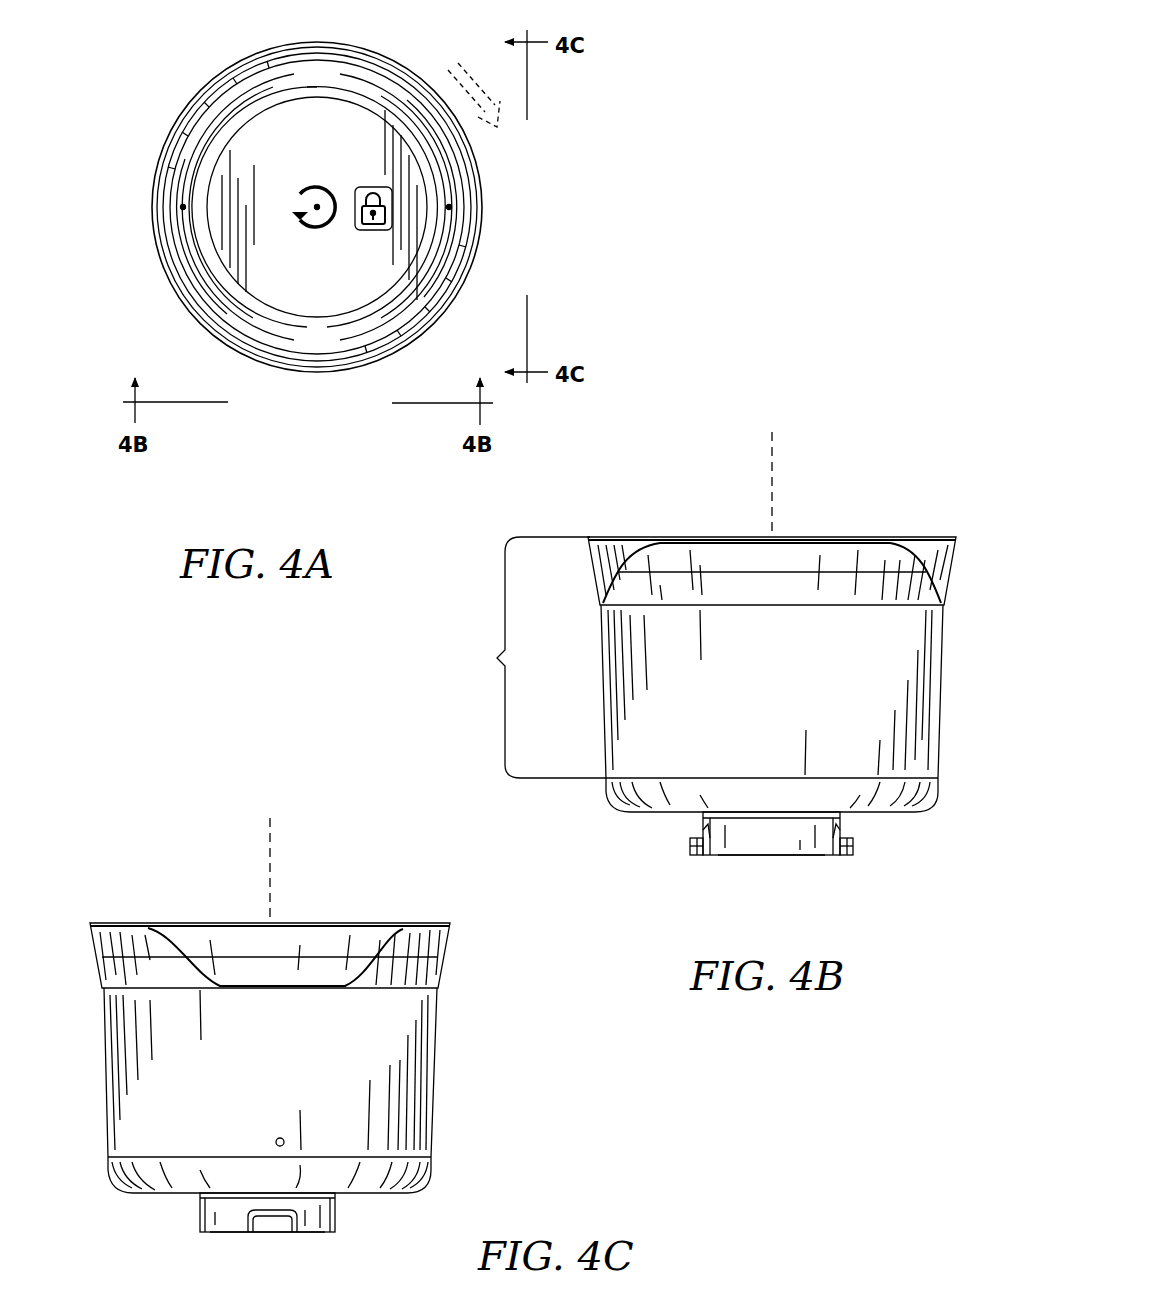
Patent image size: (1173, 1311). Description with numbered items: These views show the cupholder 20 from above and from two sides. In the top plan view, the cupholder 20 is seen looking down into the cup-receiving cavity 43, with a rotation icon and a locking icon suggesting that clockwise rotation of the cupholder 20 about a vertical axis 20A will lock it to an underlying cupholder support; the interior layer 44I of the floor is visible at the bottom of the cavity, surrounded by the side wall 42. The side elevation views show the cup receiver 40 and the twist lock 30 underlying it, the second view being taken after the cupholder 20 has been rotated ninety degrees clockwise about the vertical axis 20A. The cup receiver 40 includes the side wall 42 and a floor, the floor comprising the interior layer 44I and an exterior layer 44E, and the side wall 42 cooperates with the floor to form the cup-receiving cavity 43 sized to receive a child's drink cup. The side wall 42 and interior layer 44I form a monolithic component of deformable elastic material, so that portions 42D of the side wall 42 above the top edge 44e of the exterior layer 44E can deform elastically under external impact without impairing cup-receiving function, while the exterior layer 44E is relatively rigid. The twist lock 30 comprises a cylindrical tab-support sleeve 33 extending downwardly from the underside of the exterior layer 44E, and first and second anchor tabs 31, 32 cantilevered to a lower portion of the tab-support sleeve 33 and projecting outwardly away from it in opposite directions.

In FIG. 4A, the cupholder 20 is at (363, 42).
In FIG. 4B, the cupholder 20 is at (840, 535).
In FIG. 4C, the cupholder 20 is at (340, 920).
In FIG. 4A, the vertical axis 20A is at (314, 207).
In FIG. 4B, the vertical axis 20A is at (776, 460).
In FIG. 4C, the vertical axis 20A is at (274, 848).
In FIG. 4B, the twist lock 30 is at (722, 862).
In FIG. 4C, the twist lock 30 is at (195, 1212).
In FIG. 4B, the first anchor tab 31 is at (853, 846).
In FIG. 4C, the first anchor tab 31 is at (272, 1232).
In FIG. 4B, the second anchor tab 32 is at (690, 846).
In FIG. 4B, the tab-support sleeve 33 is at (765, 838).
In FIG. 4C, the tab-support sleeve 33 is at (335, 1210).
In FIG. 4B, the cup receiver 40 is at (605, 702).
In FIG. 4C, the cup receiver 40 is at (435, 1097).
In FIG. 4A, the side wall 42 is at (435, 253).
In FIG. 4B, the side wall 42 is at (945, 555).
In FIG. 4C, the side wall 42 is at (440, 945).
In FIG. 4B, the portions of side wall 42D is at (522, 657).
In FIG. 4A, the cup-receiving cavity 43 is at (272, 138).
In FIG. 4B, the top edge of exterior layer 44e is at (690, 778).
In FIG. 4C, the top edge of exterior layer 44e is at (205, 1157).
In FIG. 4B, the exterior layer 44E is at (628, 818).
In FIG. 4C, the exterior layer 44E is at (425, 1173).
In FIG. 4A, the interior layer 44I is at (334, 282).